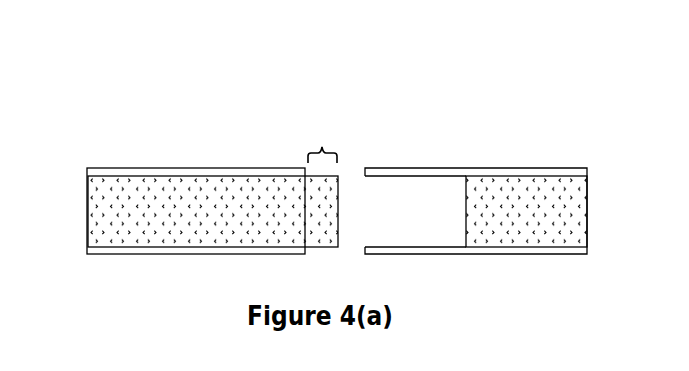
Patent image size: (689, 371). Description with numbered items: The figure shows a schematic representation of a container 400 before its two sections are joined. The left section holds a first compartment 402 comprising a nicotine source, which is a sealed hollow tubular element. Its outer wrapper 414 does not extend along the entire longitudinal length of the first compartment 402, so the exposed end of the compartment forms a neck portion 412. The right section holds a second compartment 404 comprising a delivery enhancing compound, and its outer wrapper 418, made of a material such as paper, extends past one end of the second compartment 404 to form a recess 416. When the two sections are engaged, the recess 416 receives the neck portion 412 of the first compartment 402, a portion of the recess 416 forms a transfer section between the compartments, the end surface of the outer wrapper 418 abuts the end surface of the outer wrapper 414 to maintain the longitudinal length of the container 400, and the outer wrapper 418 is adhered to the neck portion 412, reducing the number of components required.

The container 400 is at (325, 90).
The first compartment 402 is at (194, 183).
The second compartment 404 is at (546, 183).
The neck portion 412 is at (325, 138).
The outer wrapper 414 is at (106, 251).
The recess 416 is at (423, 184).
The outer wrapper 418 is at (548, 250).